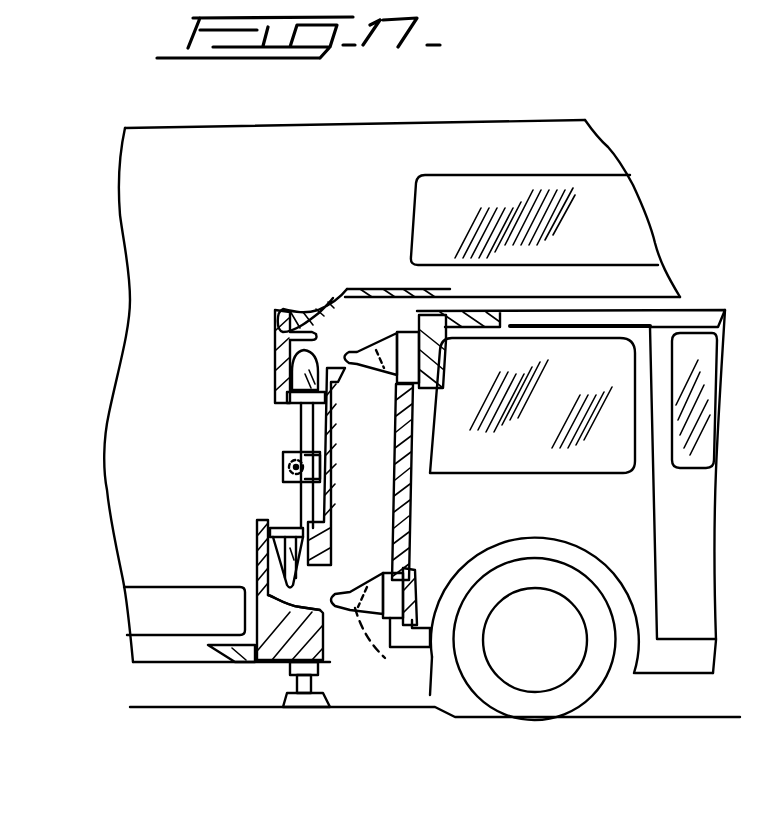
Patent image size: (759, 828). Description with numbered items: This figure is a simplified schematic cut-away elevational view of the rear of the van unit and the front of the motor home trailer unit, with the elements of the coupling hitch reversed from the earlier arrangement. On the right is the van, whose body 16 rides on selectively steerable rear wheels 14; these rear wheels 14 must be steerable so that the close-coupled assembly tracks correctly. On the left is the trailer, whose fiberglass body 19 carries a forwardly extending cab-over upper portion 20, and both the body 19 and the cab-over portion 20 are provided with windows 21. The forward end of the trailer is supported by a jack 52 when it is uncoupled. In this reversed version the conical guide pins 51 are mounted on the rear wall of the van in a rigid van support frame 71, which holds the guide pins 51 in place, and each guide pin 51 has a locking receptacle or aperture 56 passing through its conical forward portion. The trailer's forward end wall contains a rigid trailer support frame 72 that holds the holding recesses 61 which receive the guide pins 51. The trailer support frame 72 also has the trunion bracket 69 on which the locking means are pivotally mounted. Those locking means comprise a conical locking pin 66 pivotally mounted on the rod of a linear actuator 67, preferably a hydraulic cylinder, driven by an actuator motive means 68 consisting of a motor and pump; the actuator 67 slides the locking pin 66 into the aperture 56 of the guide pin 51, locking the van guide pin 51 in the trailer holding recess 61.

The rear wheels 14 is at (583, 683).
The body 16 is at (615, 545).
The body portion 19 is at (156, 204).
The forwardly extending upper portion 20 is at (580, 152).
The windows 21 is at (615, 215).
The guide pins 51 is at (440, 350).
The jacks 52 is at (292, 667).
The locking receptacle 56 is at (388, 660).
The holding recesses 61 is at (276, 338).
The locking pins 66 is at (288, 372).
The linear actuators 67 is at (285, 432).
The actuator motive means 68 is at (283, 463).
The trunion bracket 69 is at (313, 468).
The rigid van support frame 71 is at (410, 442).
The rigid trailer support frame 72 is at (310, 310).